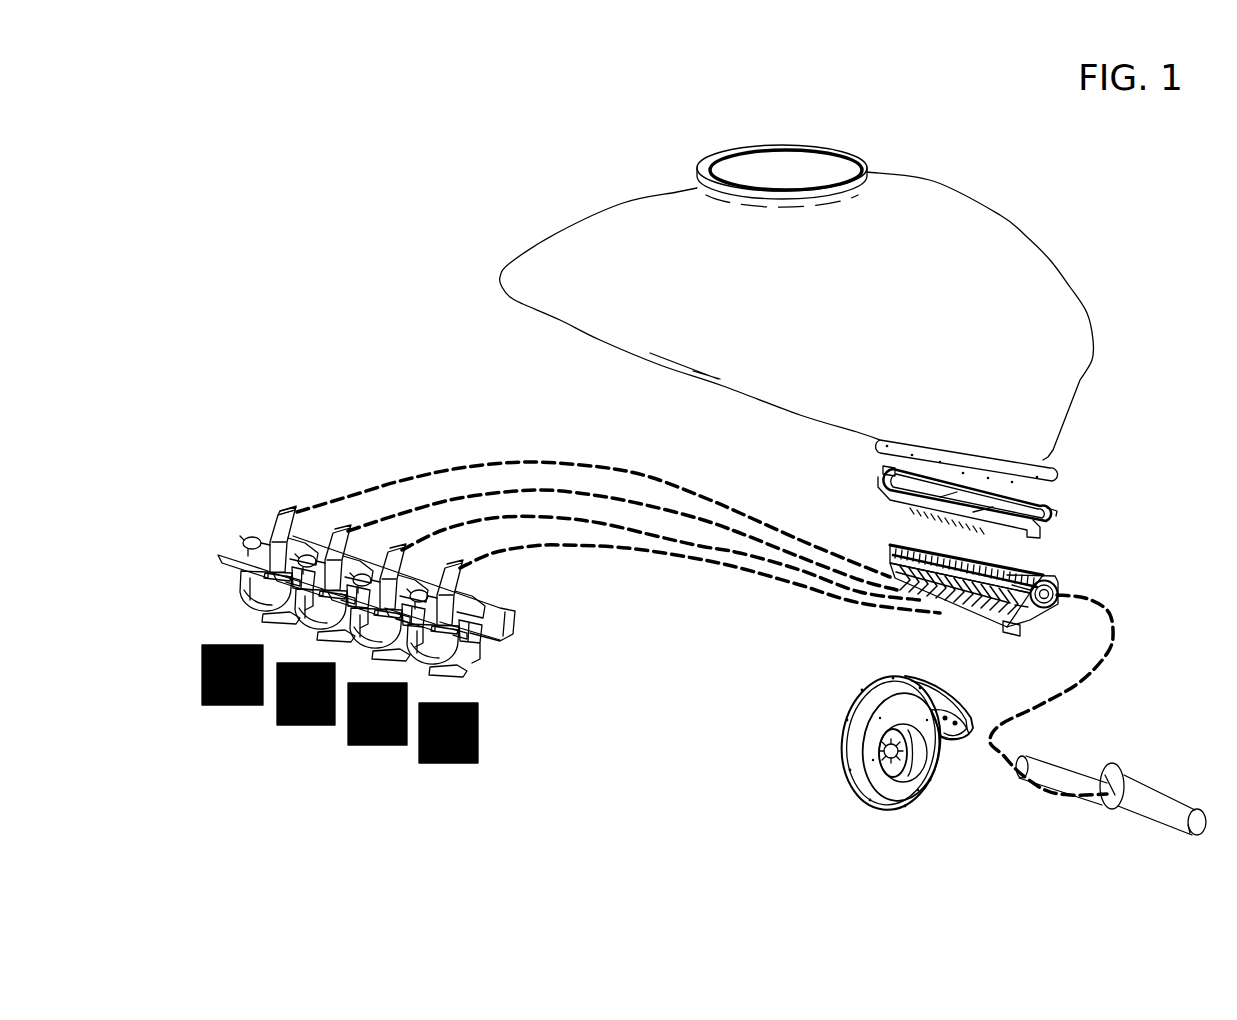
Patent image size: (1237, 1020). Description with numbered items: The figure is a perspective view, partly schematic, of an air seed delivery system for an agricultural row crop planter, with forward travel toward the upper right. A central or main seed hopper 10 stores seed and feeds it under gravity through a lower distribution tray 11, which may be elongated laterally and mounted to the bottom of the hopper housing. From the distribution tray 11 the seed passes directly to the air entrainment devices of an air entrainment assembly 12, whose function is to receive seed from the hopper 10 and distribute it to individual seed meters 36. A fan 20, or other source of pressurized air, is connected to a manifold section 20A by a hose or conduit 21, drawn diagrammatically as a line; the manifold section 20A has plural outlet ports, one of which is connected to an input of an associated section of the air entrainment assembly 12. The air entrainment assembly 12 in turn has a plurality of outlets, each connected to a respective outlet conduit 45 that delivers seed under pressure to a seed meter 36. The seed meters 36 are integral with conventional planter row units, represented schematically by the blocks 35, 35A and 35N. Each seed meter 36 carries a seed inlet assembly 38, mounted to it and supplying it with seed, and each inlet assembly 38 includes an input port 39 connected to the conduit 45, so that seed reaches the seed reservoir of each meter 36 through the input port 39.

The central seed hopper 10 is at (968, 192).
The lower distribution tray 11 is at (1053, 507).
The air entrainment assembly 12 is at (1053, 568).
The fan 20 is at (900, 814).
The manifold section 20A is at (1137, 769).
The conduit 21 is at (1019, 788).
The planter row unit 35 is at (443, 766).
The planter row unit 35A is at (377, 746).
The planter row unit 35N is at (305, 727).
The seed meter 36 is at (489, 651).
The seed inlet assembly 38 is at (277, 513).
The input port 39 is at (296, 508).
The outlet conduit 45 is at (379, 491).